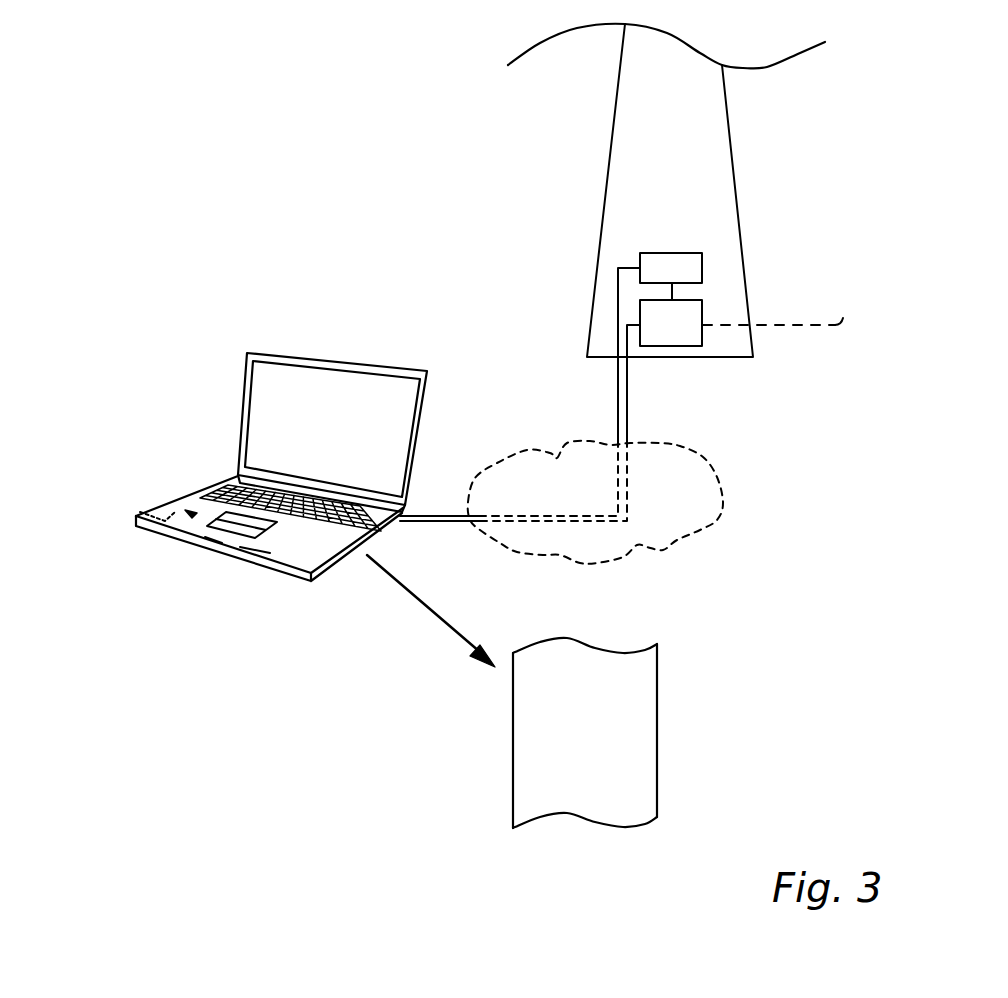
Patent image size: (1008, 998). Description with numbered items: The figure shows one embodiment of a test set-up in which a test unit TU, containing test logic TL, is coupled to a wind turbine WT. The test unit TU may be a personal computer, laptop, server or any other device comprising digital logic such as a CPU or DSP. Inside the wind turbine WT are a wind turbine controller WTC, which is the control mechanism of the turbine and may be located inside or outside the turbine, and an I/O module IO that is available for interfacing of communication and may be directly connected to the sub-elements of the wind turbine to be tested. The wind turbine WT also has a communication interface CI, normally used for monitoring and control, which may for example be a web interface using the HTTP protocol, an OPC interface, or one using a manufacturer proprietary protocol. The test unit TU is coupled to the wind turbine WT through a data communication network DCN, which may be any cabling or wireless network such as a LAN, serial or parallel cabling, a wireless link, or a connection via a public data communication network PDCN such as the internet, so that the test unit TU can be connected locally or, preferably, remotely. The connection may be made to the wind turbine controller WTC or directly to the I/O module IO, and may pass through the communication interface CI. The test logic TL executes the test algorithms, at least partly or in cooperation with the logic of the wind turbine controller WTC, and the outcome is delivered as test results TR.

The wind turbine WT is at (735, 168).
The I/O module IO is at (660, 252).
The wind turbine controller WTC is at (670, 348).
The communication interface CI is at (793, 307).
The data communication network DCN is at (625, 412).
The public data communication network PDCN is at (673, 543).
The test unit TU is at (243, 413).
The test logic TL is at (167, 523).
The test results TR is at (658, 745).